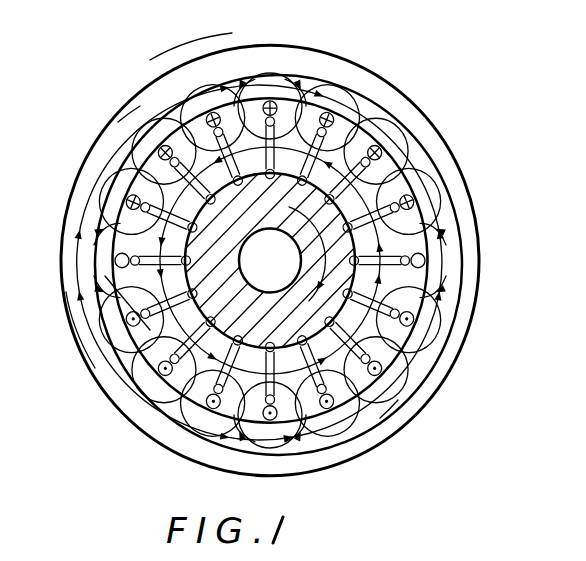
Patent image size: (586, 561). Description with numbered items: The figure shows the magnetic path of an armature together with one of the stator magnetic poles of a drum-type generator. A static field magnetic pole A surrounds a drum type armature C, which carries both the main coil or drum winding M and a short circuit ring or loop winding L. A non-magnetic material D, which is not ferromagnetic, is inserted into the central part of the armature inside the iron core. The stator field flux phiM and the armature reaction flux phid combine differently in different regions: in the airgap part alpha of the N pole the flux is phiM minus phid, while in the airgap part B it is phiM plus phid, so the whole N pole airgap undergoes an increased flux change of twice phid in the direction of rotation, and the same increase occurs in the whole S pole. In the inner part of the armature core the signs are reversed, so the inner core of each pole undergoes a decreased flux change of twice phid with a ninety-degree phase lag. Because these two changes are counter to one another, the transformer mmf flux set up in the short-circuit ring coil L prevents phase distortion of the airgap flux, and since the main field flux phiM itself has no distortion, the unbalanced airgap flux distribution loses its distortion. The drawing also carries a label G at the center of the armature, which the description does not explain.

The static field magnetic pole A is at (270, 260).
The drum type armature C is at (408, 241).
The main coil (drum winding) M is at (387, 203).
The short circuit winding (ring or loop winding) L is at (270, 260).
The β airgap part B is at (363, 165).
The rotor / shaft G is at (270, 260).
The N pole N is at (195, 150).
The S pole S is at (331, 373).
The non-magnetic material D is at (105, 276).
The α airgap part alpha is at (123, 127).
The flux of the stator field (main field flux) phiM is at (191, 76).
The flux of the reaction of the armature phid is at (66, 292).